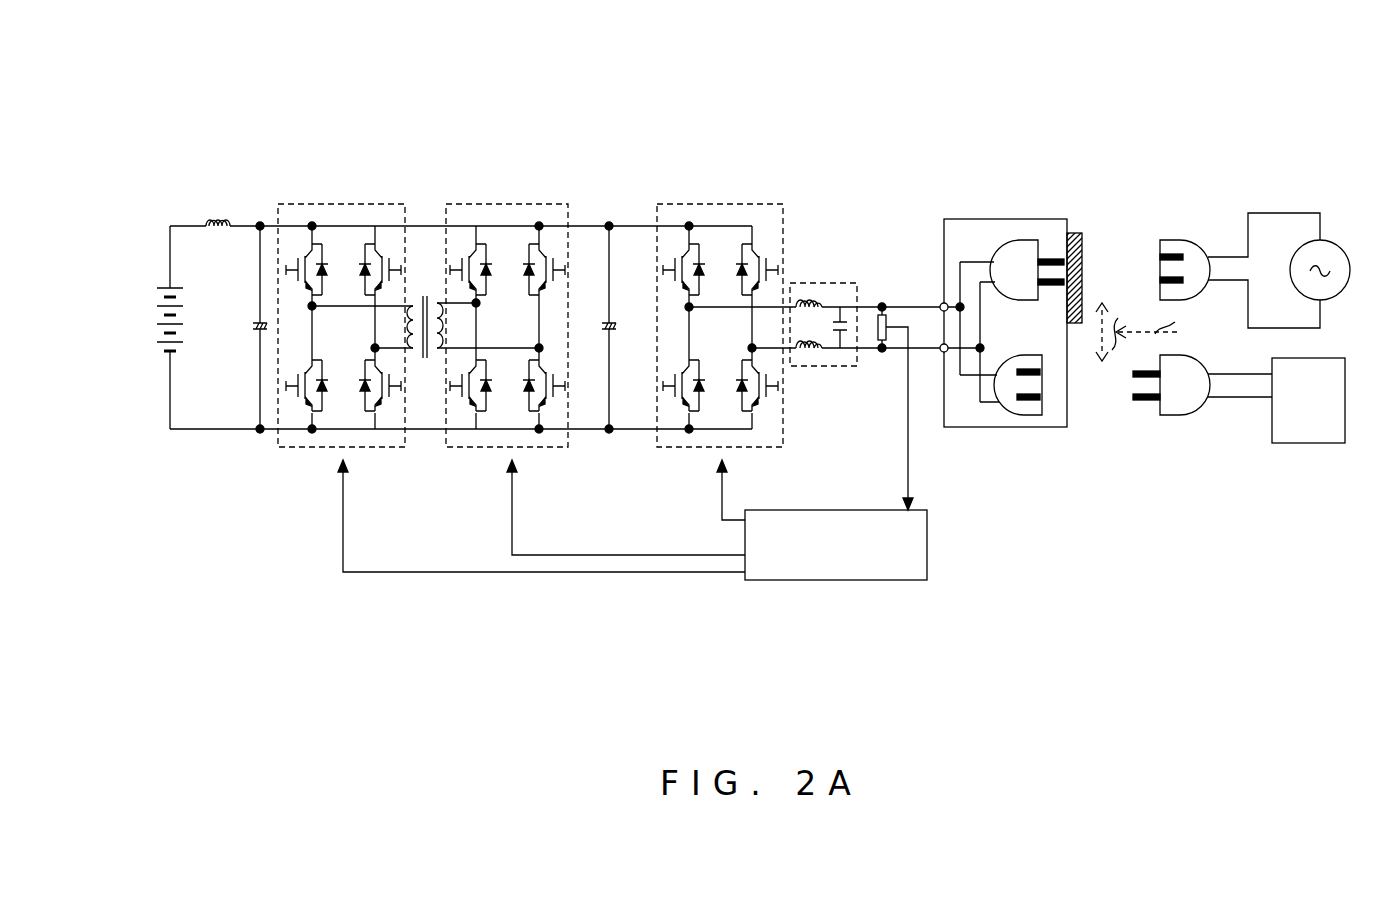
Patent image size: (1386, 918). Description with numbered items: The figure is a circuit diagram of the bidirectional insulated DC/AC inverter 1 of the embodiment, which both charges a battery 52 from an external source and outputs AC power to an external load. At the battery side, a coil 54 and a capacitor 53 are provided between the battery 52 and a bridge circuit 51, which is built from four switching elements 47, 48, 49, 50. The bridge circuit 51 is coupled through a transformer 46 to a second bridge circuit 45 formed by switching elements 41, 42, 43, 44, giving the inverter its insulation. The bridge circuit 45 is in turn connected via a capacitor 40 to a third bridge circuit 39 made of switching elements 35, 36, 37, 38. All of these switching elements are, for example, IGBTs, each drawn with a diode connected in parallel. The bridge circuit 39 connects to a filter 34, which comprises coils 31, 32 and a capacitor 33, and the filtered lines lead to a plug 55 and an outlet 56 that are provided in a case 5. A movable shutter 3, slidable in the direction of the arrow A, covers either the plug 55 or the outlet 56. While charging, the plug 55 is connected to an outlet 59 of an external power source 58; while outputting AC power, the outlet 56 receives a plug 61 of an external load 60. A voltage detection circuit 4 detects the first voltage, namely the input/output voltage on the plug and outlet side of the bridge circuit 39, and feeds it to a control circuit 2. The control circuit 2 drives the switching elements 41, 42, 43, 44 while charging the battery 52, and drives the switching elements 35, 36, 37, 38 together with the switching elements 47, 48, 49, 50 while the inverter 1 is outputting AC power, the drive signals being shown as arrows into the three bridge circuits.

The bidirectional insulated DC/AC inverter 1 is at (681, 66).
The control circuit 2 is at (836, 581).
The movable shutter 3 is at (1083, 272).
The voltage detection circuit 4 is at (890, 310).
The case 5 is at (1003, 308).
The coil 31 is at (808, 297).
The coil 32 is at (808, 358).
The capacitor 33 is at (841, 284).
The filter 34 is at (824, 340).
The switching element 35 is at (684, 258).
The switching element 36 is at (760, 257).
The switching element 37 is at (682, 396).
The switching element 38 is at (757, 397).
The bridge circuit 39 is at (725, 314).
The capacitor 40 is at (606, 336).
The switching element 41 is at (466, 228).
The switching element 42 is at (548, 257).
The switching element 43 is at (469, 396).
The switching element 44 is at (542, 397).
The bridge circuit 45 is at (507, 314).
The transformer 46 is at (428, 294).
The switching element 47 is at (305, 258).
The switching element 48 is at (384, 257).
The switching element 49 is at (305, 396).
The switching element 50 is at (378, 397).
The bridge circuit 51 is at (340, 315).
The battery 52 is at (161, 286).
The capacitor 53 is at (256, 318).
The coil 54 is at (211, 210).
The plug 55 is at (1015, 239).
The outlet 56 is at (1020, 416).
The external power source 58 is at (1338, 246).
The outlet 59 is at (1181, 239).
The external load 60 is at (1309, 445).
The plug 61 is at (1186, 417).